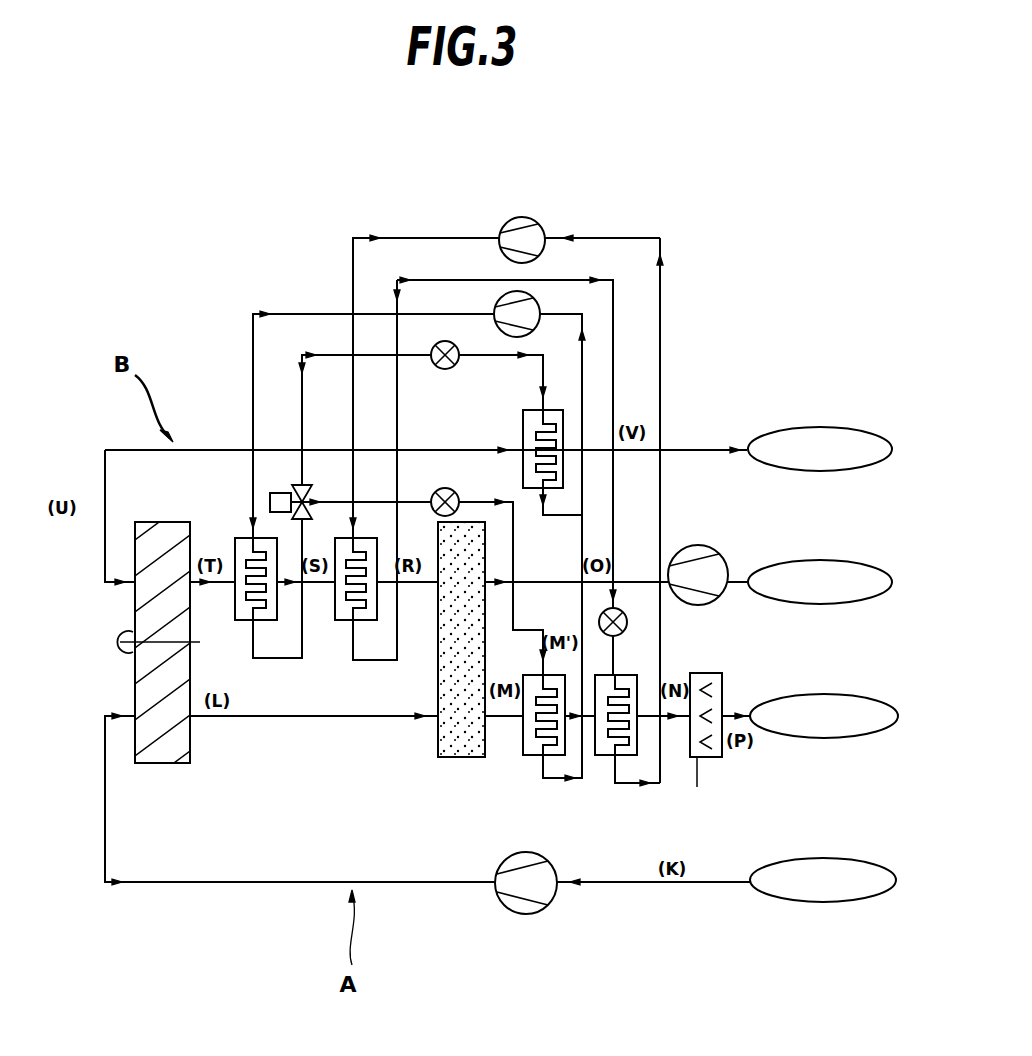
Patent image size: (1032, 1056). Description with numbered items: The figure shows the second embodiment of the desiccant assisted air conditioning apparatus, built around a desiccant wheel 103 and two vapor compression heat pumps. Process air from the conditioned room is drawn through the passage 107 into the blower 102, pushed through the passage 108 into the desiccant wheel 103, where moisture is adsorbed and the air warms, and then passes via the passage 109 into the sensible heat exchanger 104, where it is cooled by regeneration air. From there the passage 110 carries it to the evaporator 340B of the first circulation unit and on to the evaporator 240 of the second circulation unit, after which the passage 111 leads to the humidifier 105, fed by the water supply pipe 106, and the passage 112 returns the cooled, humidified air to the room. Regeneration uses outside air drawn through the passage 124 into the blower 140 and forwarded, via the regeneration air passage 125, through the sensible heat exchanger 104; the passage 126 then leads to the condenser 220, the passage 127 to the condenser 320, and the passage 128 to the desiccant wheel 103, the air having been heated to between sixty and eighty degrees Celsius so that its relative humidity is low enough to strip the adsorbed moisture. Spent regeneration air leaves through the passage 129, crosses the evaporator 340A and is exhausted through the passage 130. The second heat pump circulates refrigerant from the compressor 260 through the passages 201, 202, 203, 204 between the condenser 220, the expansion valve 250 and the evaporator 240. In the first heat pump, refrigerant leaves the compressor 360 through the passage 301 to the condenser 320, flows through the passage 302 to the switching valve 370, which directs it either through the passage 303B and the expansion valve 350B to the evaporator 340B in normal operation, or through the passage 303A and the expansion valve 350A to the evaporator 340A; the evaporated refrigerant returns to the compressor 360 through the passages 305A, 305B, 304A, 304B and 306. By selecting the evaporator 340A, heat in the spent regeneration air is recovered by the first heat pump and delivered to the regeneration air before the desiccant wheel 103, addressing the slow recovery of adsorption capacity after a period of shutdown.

The blower 102 is at (504, 905).
The desiccant wheel 103 is at (133, 680).
The sensible heat exchanger 104 is at (452, 758).
The humidifier 105 is at (716, 670).
The water supply pipe 106 is at (698, 787).
The process air passage 107 is at (628, 885).
The process air passage 108 is at (202, 885).
The process air passage 109 is at (357, 720).
The process air passage 110 is at (497, 720).
The process air passage 111 is at (672, 720).
The process air passage 112 is at (735, 713).
The regeneration air passage 124 is at (740, 580).
The regeneration air passage 125 is at (635, 580).
The regeneration air passage 126 is at (412, 590).
The regeneration air passage 127 is at (312, 590).
The regeneration air passage 128 is at (218, 590).
The regeneration air passage 129 is at (102, 584).
The regeneration air passage 130 is at (708, 449).
The blower 140 is at (692, 546).
The refrigerant passage 201 is at (351, 272).
The refrigerant passage 202 is at (380, 662).
The refrigerant passage 203 is at (620, 645).
The refrigerant passage 204 is at (662, 282).
The condenser 220 is at (347, 624).
The evaporator 240 is at (603, 757).
The expansion valve 250 is at (628, 622).
The compressor 260 is at (522, 217).
The refrigerant passage 301 is at (253, 325).
The refrigerant passage 302 is at (262, 660).
The refrigerant passage 303A is at (340, 354).
The refrigerant passage 303B is at (302, 478).
The refrigerant passage 304A is at (500, 356).
The refrigerant passage 304B is at (550, 630).
The refrigerant pipe 305A is at (548, 516).
The refrigerant pipe 305B is at (560, 780).
The refrigerant pipe 306 is at (615, 360).
The condenser 320 is at (240, 537).
The evaporator 340A is at (523, 420).
The evaporator 340B is at (532, 757).
The expansion valve 350A is at (445, 370).
The expansion valve 350B is at (455, 492).
The compressor 360 is at (501, 298).
The switching valve 370 is at (270, 496).